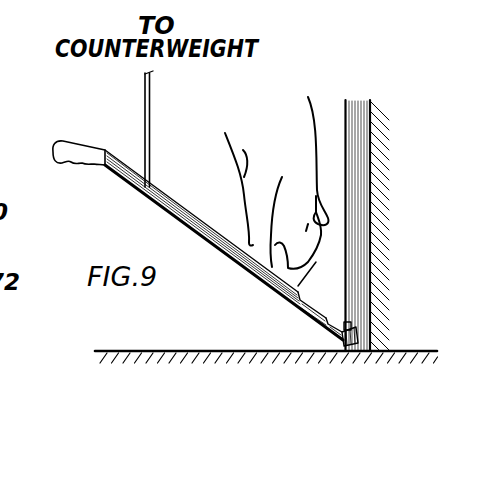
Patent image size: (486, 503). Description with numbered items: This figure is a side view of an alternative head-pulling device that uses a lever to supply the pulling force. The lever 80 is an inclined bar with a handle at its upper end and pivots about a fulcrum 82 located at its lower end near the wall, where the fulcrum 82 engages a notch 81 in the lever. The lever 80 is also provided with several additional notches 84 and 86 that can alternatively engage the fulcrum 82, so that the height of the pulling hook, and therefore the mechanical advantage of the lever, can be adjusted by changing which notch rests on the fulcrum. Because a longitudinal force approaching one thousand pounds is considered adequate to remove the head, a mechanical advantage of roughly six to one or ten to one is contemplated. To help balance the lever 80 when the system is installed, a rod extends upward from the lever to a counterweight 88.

The lever 80 is at (57, 147).
The counterweight 88 is at (152, 100).
The notch 86 is at (305, 283).
The notch 84 is at (332, 310).
The notch 81 is at (349, 327).
The fulcrum 82 is at (353, 334).